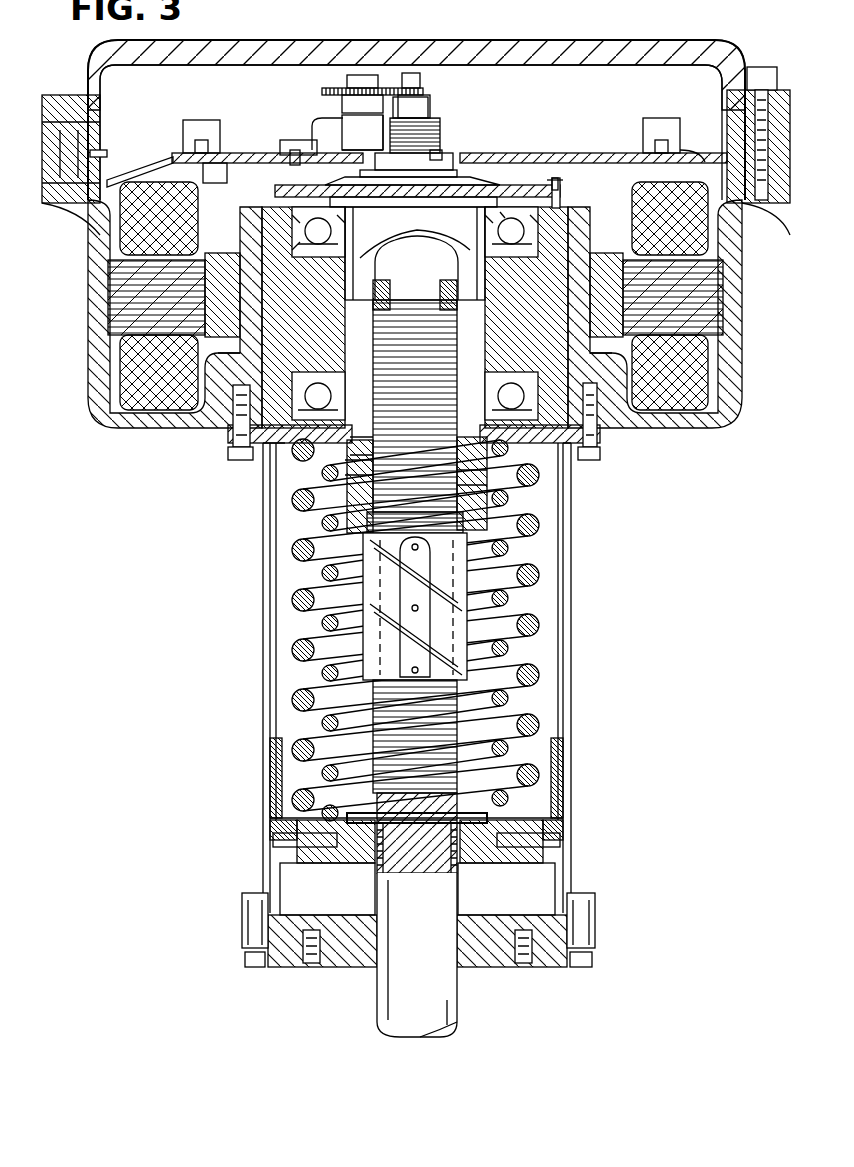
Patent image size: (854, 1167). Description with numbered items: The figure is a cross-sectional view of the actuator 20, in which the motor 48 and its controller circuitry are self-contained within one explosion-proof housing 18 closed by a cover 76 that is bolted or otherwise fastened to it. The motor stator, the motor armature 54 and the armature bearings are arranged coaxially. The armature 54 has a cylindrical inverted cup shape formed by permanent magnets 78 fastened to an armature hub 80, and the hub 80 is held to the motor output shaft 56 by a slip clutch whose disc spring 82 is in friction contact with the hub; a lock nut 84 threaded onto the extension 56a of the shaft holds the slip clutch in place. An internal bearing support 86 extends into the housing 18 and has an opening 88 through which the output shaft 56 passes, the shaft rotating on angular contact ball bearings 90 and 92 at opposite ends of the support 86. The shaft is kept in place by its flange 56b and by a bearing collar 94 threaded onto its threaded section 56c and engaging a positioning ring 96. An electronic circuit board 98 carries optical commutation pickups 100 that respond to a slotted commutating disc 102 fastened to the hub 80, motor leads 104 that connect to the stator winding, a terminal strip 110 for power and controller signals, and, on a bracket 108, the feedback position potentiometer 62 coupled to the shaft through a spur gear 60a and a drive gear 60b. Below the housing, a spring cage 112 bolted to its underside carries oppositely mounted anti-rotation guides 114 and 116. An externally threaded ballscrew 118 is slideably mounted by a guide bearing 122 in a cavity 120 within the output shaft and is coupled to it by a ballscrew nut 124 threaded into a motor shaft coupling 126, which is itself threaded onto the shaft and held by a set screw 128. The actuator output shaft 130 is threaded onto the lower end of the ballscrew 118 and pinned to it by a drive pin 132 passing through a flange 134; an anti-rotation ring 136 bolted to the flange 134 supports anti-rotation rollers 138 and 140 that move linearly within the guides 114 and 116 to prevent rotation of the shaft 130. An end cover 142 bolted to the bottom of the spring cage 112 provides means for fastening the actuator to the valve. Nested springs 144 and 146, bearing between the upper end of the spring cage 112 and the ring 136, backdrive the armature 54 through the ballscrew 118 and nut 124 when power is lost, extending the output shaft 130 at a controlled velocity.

The housing 18 is at (100, 312).
The actuator 20 is at (175, 595).
The motor 48 is at (108, 238).
The motor armature 54 is at (200, 222).
The motor output shaft 56 is at (233, 430).
The extension of the output shaft 56a is at (440, 152).
The flange 56b is at (505, 225).
The threaded section 56c is at (492, 490).
The spur gear 60a is at (425, 73).
The drive gear 60b is at (370, 75).
The feedback position potentiometer 62 is at (376, 141).
The cover 76 is at (296, 42).
The permanent magnets 78 is at (270, 357).
The armature hub 80 is at (582, 226).
The disc spring 82 is at (465, 188).
The lock nut 84 is at (432, 168).
The internal bearing support 86 is at (540, 336).
The opening 88 is at (362, 333).
The angular contact ball bearing 90 is at (520, 225).
The angular contact ball bearing 92 is at (598, 415).
The bearing collar 94 is at (345, 470).
The positioning ring 96 is at (335, 455).
The electronic circuit board 98 is at (528, 165).
The optical commutation pickups 100 is at (248, 152).
The slotted commutating disc 102 is at (238, 170).
The motor leads 104 is at (690, 130).
The bracket 108 is at (300, 140).
The terminal strip 110 is at (185, 126).
The spring cage 112 is at (265, 592).
The anti-rotation guide 114 is at (563, 782).
The anti-rotation guide 116 is at (268, 790).
The ballscrew 118 is at (278, 765).
The cavity 120 is at (447, 268).
The guide bearing 122 is at (372, 266).
The ballscrew nut 124 is at (462, 620).
The motor shaft coupling 126 is at (466, 530).
The set screw 128 is at (350, 487).
The actuator output shaft 130 is at (377, 1010).
The drive pin 132 is at (367, 830).
The flange 134 is at (557, 798).
The anti-rotation ring 136 is at (497, 853).
The anti-rotation roller 138 is at (553, 855).
The anti-rotation roller 140 is at (270, 853).
The end cover 142 is at (287, 963).
The nested spring 144 is at (292, 650).
The nested spring 146 is at (322, 726).